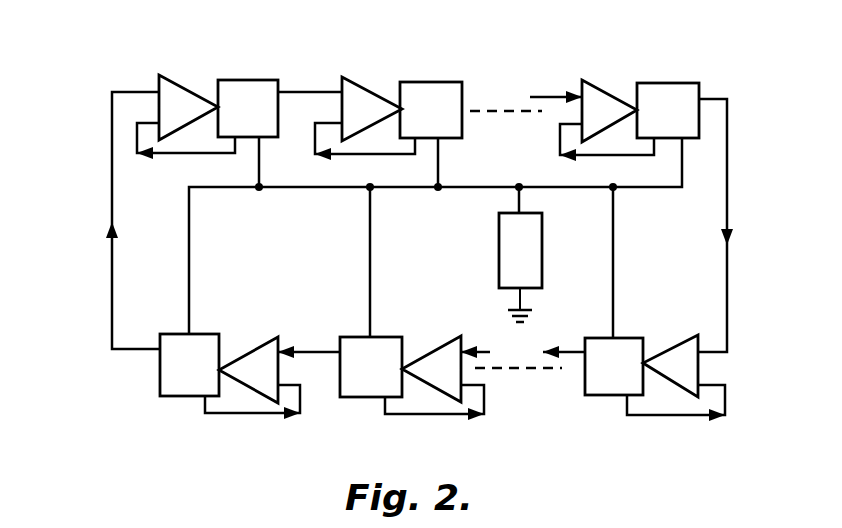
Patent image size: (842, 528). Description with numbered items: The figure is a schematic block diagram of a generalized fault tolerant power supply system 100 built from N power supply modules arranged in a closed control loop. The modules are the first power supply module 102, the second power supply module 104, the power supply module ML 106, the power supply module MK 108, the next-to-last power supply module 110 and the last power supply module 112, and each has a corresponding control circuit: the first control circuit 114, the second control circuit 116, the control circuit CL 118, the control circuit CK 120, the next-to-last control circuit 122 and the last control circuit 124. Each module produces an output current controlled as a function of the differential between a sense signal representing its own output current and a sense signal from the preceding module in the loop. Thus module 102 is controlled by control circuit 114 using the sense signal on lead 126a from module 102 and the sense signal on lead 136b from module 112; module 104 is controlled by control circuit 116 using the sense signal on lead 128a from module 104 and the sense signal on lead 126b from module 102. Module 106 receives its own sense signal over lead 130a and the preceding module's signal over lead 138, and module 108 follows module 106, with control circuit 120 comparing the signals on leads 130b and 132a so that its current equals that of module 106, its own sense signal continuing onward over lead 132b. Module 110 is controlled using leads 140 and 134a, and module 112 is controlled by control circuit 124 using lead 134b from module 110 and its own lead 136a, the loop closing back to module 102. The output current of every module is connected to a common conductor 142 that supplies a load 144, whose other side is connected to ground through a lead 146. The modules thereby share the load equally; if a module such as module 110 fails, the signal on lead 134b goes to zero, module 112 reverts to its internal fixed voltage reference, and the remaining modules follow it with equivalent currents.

The fault tolerant power supply system 100 is at (213, 438).
The power supply module M1 102 is at (237, 80).
The power supply module M2 104 is at (440, 82).
The power supply module ML 106 is at (678, 83).
The power supply module MK 108 is at (598, 396).
The power supply module MN-1 110 is at (362, 398).
The power supply module MN 112 is at (160, 377).
The control circuit C1 114 is at (176, 75).
The control circuit C2 116 is at (358, 85).
The control circuit CL 118 is at (598, 86).
The control circuit CK 120 is at (660, 345).
The control circuit CN-1 122 is at (426, 352).
The control circuit CN 124 is at (253, 350).
The lead 126a is at (170, 153).
The lead 126b is at (300, 92).
The lead 128a is at (343, 154).
The lead 130a is at (587, 155).
The lead 130b is at (727, 188).
The lead 132a is at (651, 415).
The lead 132b is at (568, 352).
The lead 134a is at (408, 414).
The lead 134b is at (311, 352).
The lead 136a is at (243, 413).
The lead 136b is at (112, 276).
The lead 138 is at (550, 94).
The lead 140 is at (486, 351).
The common conductor 142 is at (398, 190).
The load 144 is at (499, 250).
The lead 146 is at (522, 298).